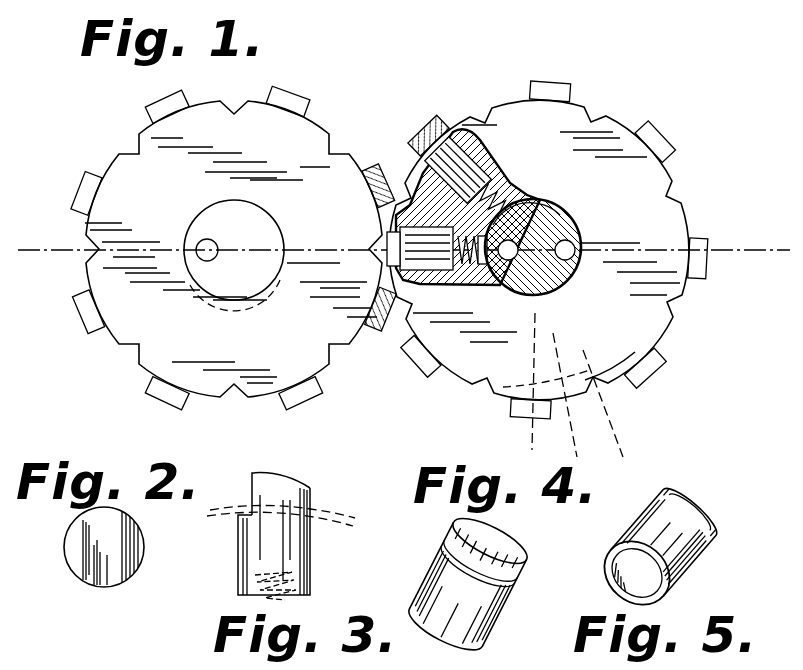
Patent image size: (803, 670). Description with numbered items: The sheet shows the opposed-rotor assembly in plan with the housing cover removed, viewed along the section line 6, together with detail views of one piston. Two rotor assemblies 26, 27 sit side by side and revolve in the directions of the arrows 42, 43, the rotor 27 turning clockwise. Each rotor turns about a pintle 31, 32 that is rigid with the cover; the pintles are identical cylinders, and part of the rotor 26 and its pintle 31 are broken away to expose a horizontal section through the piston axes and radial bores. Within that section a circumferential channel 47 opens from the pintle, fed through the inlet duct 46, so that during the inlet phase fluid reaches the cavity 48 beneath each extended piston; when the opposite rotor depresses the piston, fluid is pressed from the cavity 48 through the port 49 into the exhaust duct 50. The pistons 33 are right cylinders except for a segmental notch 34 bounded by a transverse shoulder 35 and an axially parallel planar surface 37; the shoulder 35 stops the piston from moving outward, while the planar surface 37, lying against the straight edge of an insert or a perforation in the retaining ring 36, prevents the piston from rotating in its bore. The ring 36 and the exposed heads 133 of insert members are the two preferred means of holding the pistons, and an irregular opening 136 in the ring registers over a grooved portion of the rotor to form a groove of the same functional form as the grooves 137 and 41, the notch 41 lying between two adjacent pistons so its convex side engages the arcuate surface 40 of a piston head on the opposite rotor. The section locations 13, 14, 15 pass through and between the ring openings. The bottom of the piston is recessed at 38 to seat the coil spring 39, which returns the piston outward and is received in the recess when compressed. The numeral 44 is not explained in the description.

In FIG. 1, the figure 6 section line 6 is at (35, 251).
In FIG. 1, the ring opening section location 13 is at (535, 318).
In FIG. 1, the between-openings section location 14 is at (555, 340).
In FIG. 1, the ring opening section location 15 is at (583, 357).
In FIG. 1, the rotor assembly 26 is at (637, 181).
In FIG. 1, the rotor assembly 27 is at (145, 167).
In FIG. 1, the pintle 31 is at (556, 284).
In FIG. 1, the pintle 32 is at (248, 231).
In FIG. 2, the piston 33 is at (144, 531).
In FIG. 1, the segmental notch 34 is at (406, 150).
In FIG. 3, the segmental notch 34 is at (243, 478).
In FIG. 2, the transverse shoulder 35 is at (76, 559).
In FIG. 3, the transverse shoulder 35 is at (240, 520).
In FIG. 4, the transverse shoulder 35 is at (446, 549).
In FIG. 1, the retaining ring 36 is at (560, 390).
In FIG. 3, the retaining ring 36 is at (318, 512).
In FIG. 1, the planar surface 37 is at (182, 93).
In FIG. 2, the planar surface 37 is at (83, 535).
In FIG. 3, the planar surface 37 is at (252, 491).
In FIG. 4, the planar surface 37 is at (506, 579).
In FIG. 5, the recess 38 is at (606, 573).
In FIG. 3, the coil spring 39 is at (296, 582).
In FIG. 1, the arcuate surface 40 is at (296, 92).
In FIG. 3, the arcuate surface 40 is at (280, 478).
In FIG. 1, the notch 41 is at (333, 128).
In FIG. 1, the direction arrow 42 is at (497, 142).
In FIG. 1, the direction arrow 43 is at (288, 140).
In FIG. 3, the element 44 is at (372, 669).
In FIG. 1, the inlet duct 46 is at (572, 246).
In FIG. 1, the circumferential channel 47 is at (558, 210).
In FIG. 1, the cavity 48 is at (503, 178).
In FIG. 1, the port 49 is at (497, 286).
In FIG. 4, the exhaust duct 50 is at (428, 664).
In FIG. 1, the insert member head 133 is at (565, 104).
In FIG. 1, the irregular opening 136 is at (597, 380).
In FIG. 1, the groove 137 is at (668, 298).